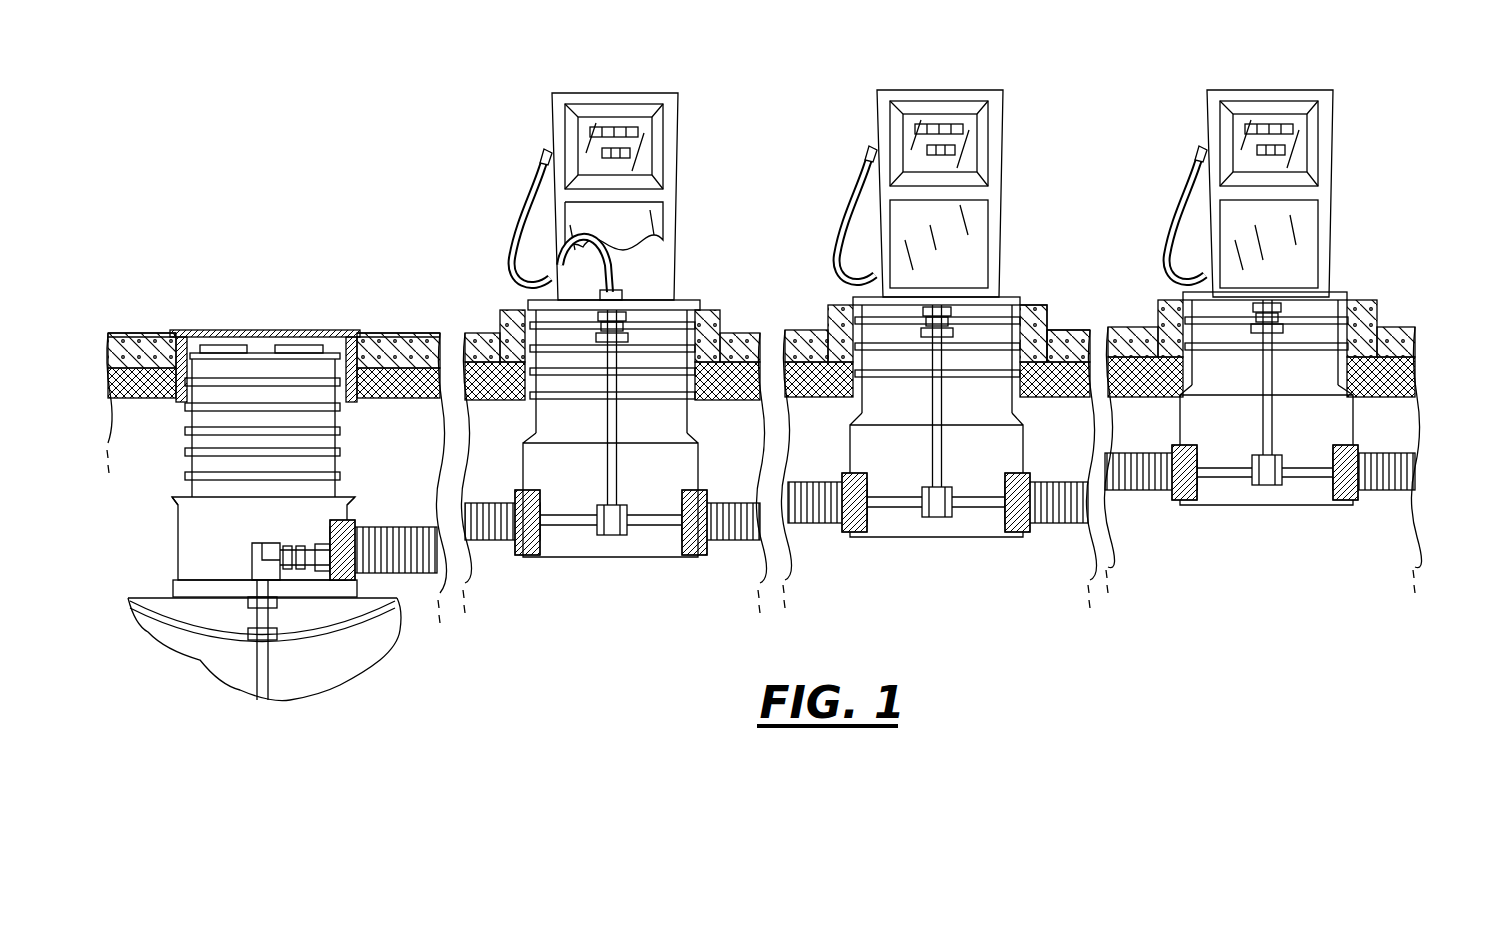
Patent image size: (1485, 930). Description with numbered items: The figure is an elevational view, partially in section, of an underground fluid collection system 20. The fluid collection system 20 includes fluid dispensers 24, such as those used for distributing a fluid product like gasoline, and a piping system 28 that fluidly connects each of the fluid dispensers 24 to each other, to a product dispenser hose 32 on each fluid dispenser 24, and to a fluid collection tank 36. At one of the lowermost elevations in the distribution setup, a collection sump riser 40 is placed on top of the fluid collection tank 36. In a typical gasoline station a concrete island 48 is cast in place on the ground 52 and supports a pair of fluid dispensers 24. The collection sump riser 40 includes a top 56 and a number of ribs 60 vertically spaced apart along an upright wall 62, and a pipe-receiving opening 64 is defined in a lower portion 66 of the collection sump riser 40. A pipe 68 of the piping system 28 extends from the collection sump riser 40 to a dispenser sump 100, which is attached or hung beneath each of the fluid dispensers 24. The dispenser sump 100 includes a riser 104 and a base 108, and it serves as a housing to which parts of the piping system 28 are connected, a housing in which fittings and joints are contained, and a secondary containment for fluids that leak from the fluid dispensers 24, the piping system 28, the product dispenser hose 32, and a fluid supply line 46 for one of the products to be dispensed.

The fluid collection system 20 is at (1350, 210).
The fluid dispensers 24 is at (680, 118).
The piping system 28 is at (1048, 527).
The product dispenser hose 32 is at (525, 222).
The fluid collection tank 36 is at (362, 677).
The collection sump riser 40 is at (185, 487).
The fluid supply line 46 is at (888, 507).
The concrete island 48 is at (1045, 328).
The ground 52 is at (1400, 373).
The top 56 is at (255, 345).
The ribs 60 is at (185, 410).
The upright wall 62 is at (338, 494).
The pipe-receiving opening 64 is at (353, 575).
The lower portion 66 is at (177, 548).
The pipe 68 is at (487, 542).
The dispenser sump 100 is at (632, 560).
The riser 104 is at (708, 300).
The base 108 is at (535, 448).